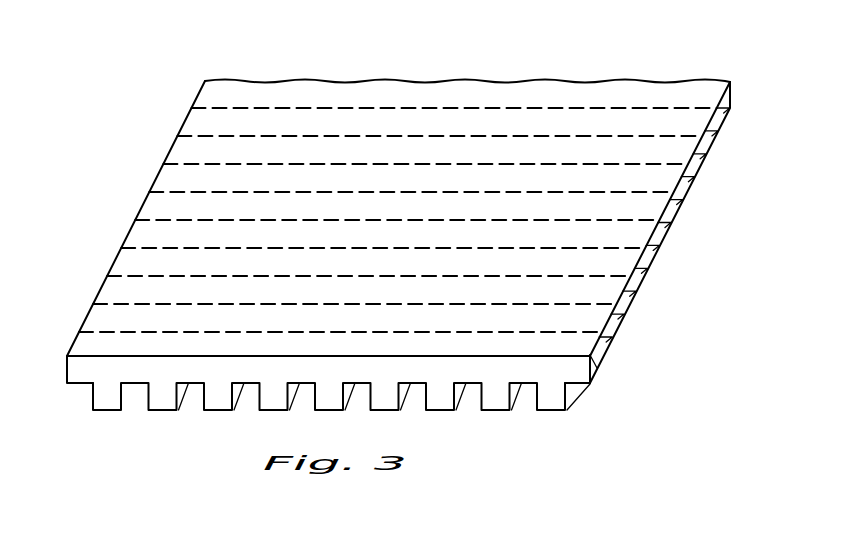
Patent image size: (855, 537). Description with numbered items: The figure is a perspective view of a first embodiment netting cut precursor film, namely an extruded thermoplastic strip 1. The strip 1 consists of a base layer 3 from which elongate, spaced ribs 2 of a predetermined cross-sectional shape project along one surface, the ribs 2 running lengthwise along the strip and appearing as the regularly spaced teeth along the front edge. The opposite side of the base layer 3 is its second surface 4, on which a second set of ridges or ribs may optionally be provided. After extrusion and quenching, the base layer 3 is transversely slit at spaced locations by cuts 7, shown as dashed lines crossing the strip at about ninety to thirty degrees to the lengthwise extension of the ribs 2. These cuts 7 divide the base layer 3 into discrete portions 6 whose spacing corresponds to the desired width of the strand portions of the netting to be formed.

The strip 1 is at (715, 54).
The ribs 2 is at (107, 397).
The base layer 3 is at (78, 372).
The second surface 4 is at (695, 128).
The discrete portions 6 is at (643, 238).
The cuts 7 is at (158, 245).